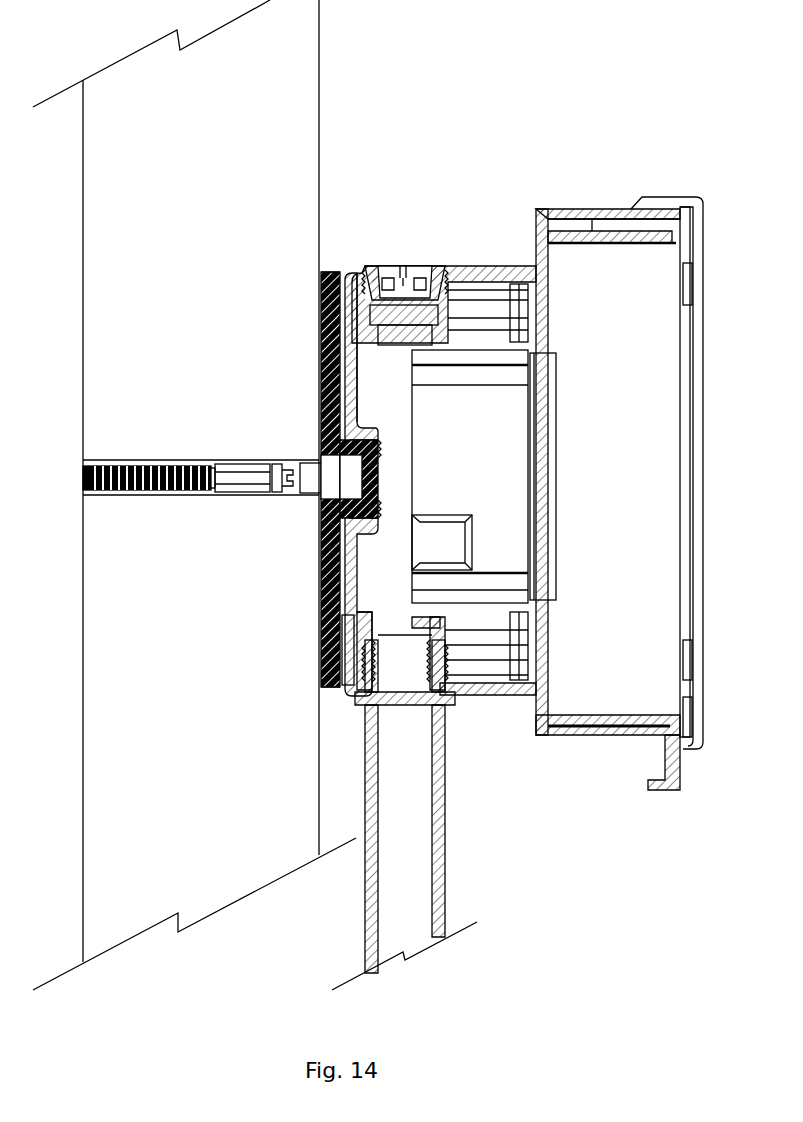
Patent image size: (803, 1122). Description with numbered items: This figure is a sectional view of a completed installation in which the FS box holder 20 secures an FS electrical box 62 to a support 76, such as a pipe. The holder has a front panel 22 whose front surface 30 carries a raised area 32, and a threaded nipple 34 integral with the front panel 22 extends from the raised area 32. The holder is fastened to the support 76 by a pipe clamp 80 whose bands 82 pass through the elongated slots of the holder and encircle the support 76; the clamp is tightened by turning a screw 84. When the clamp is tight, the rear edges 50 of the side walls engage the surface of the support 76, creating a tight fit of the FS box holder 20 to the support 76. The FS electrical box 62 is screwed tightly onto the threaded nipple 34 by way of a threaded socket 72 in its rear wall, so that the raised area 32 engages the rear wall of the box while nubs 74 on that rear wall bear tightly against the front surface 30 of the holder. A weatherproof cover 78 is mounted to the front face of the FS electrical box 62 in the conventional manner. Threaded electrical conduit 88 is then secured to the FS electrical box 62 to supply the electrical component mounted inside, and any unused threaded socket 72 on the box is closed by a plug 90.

The support 76 is at (220, 123).
The FS box holder 20 is at (338, 272).
The front panel 22 is at (325, 333).
The rear edge 50 is at (322, 276).
The front surface 30 is at (340, 590).
The raised area 32 is at (355, 405).
The threaded nipple 34 is at (380, 462).
The FS electrical box 62 is at (486, 265).
The threaded socket 72 is at (440, 288).
The nubs 74 is at (345, 657).
The weatherproof cover 78 is at (604, 208).
The pipe clamp 80 is at (242, 490).
The bands 82 is at (302, 465).
The screw 84 is at (285, 492).
The threaded electrical conduit 88 is at (446, 838).
The plug 90 is at (421, 265).